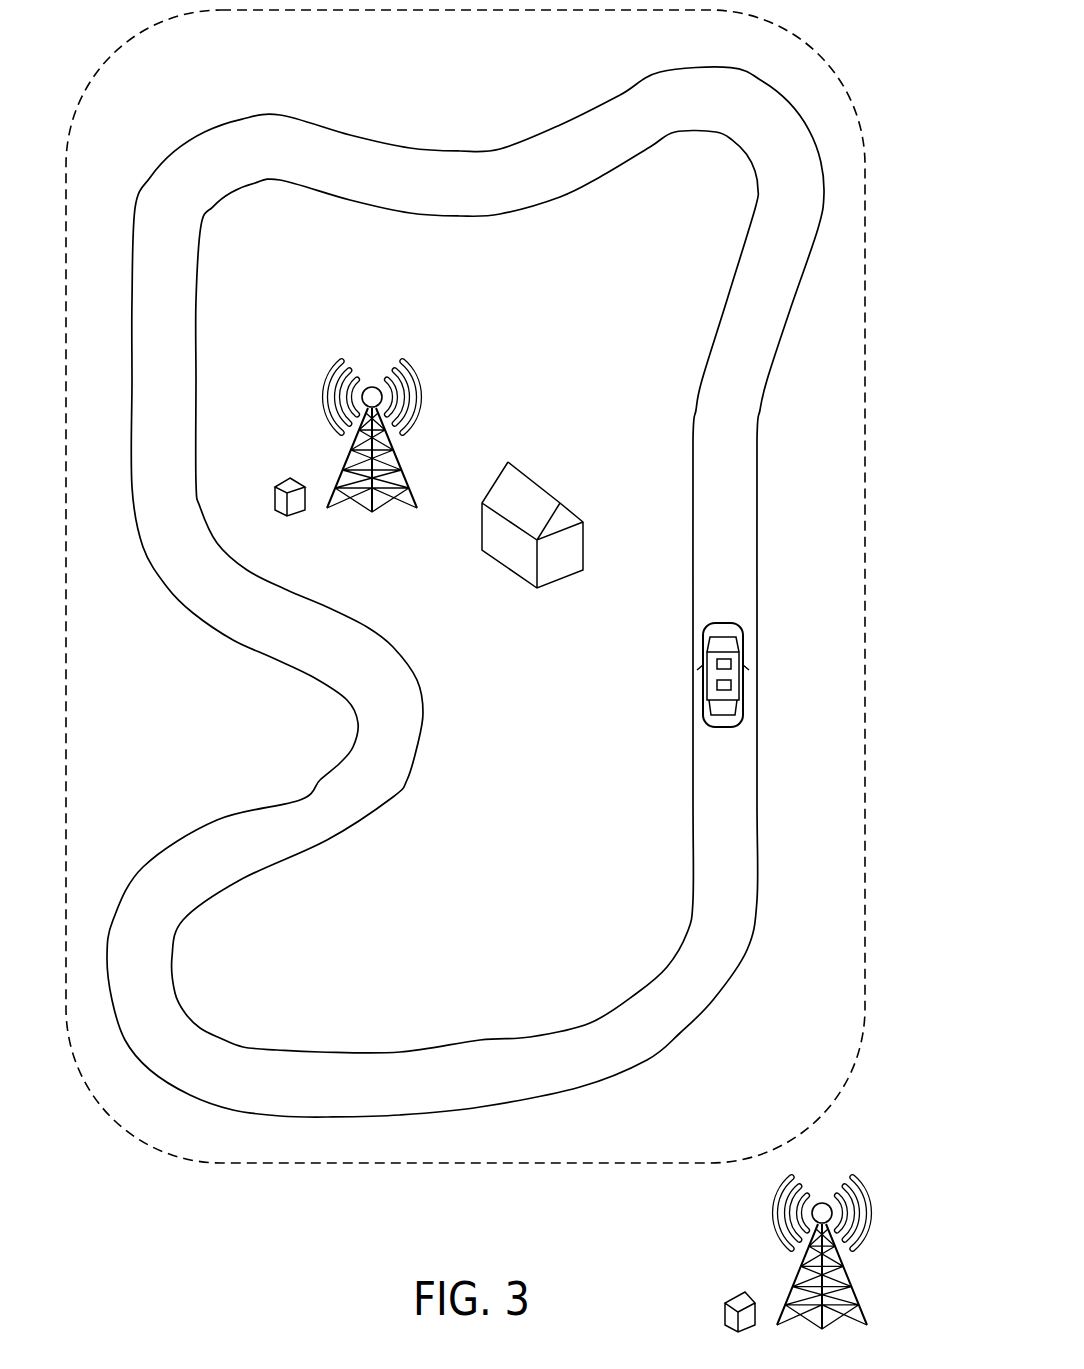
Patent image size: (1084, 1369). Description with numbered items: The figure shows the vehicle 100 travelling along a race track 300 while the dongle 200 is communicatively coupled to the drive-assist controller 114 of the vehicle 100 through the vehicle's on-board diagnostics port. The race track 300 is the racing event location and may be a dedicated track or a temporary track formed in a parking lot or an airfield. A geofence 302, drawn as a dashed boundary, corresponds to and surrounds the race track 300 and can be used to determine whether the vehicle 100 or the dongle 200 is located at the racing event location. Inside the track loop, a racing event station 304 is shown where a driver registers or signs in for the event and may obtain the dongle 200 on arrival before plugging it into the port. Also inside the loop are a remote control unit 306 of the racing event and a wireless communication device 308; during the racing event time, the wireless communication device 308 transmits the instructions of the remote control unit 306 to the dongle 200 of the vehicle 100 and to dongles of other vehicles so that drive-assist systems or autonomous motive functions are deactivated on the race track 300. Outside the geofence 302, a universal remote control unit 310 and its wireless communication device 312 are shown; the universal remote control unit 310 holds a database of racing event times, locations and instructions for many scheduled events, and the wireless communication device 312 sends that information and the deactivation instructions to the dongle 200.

The vehicle 100 is at (722, 684).
The drive-assist controller 114 is at (733, 685).
The dongle 200 is at (733, 663).
The race track 300 is at (698, 1047).
The geofence 302 is at (867, 830).
The racing event station 304 is at (508, 572).
The remote control unit 306 is at (285, 478).
The wireless communication device 308 is at (398, 475).
The universal remote control unit 310 is at (730, 1295).
The wireless communication device 312 is at (848, 1290).